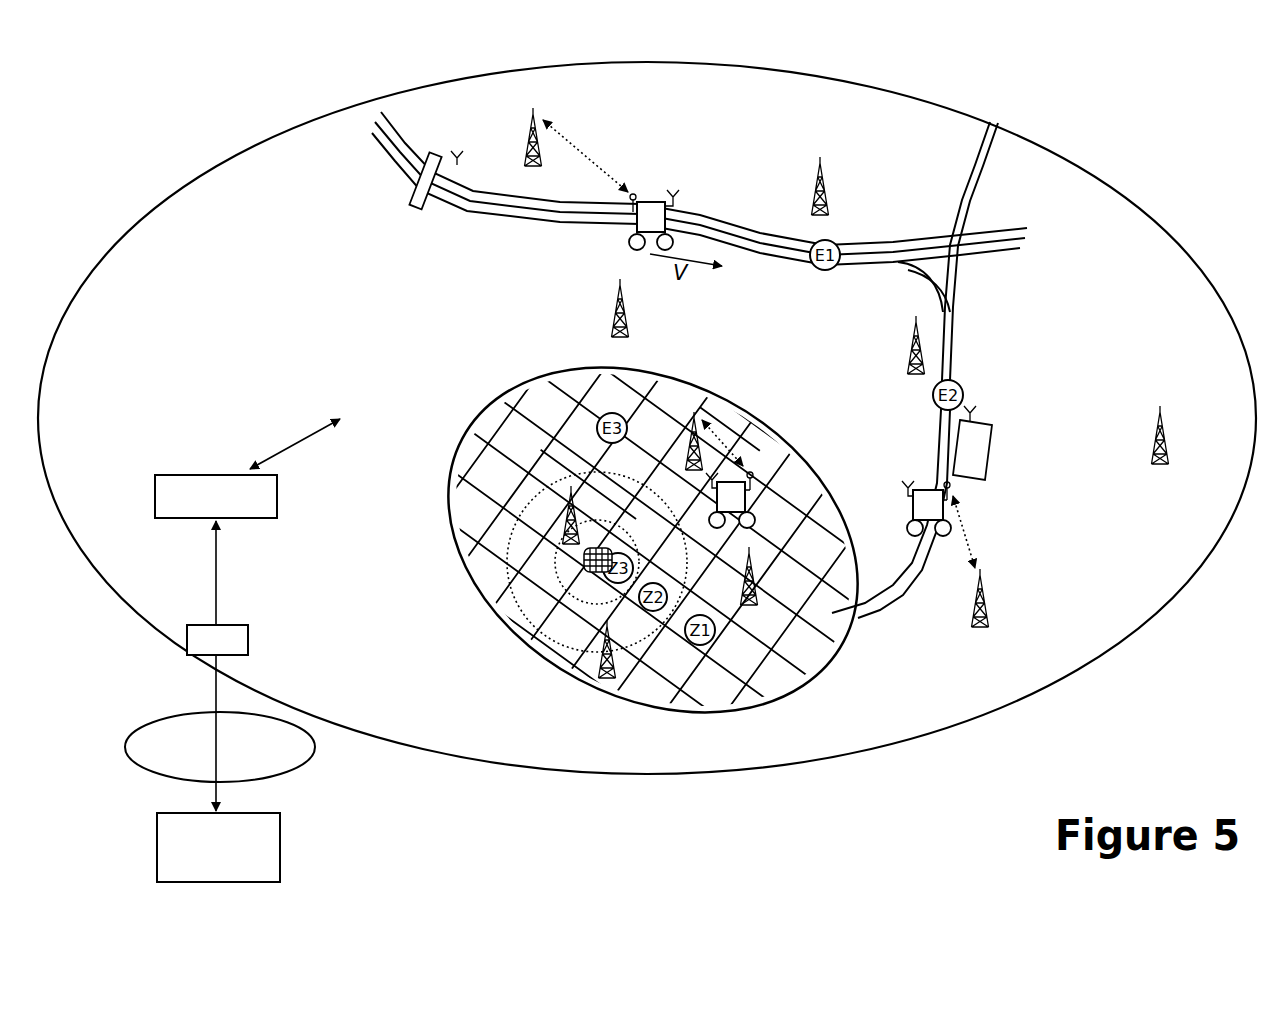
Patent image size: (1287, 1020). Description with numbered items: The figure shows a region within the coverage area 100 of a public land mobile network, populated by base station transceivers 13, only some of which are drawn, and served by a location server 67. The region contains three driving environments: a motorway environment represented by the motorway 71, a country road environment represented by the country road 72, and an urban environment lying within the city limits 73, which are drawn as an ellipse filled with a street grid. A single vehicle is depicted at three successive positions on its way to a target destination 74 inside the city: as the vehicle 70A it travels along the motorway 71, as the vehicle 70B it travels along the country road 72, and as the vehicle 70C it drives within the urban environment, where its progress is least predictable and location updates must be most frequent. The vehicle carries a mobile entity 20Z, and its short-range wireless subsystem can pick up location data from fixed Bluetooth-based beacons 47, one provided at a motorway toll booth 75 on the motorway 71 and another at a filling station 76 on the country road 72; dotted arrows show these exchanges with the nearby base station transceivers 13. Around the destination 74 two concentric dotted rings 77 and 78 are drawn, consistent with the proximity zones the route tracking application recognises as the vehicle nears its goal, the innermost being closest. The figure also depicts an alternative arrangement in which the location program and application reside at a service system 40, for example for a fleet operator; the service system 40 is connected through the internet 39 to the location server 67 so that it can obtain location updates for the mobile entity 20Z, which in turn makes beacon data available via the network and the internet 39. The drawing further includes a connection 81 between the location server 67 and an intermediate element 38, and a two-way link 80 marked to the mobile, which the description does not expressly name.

The coverage area 100 is at (102, 258).
The base station transceivers 13 is at (532, 130).
The beacons 47 is at (457, 165).
The motorway toll booth 75 is at (415, 205).
The motorway 71 is at (510, 213).
The country road 72 is at (953, 352).
The vehicle in first position 70A is at (625, 235).
The vehicle in second position 70B is at (894, 487).
The vehicle in third position 70C is at (751, 503).
The mobile entity 20Z is at (650, 202).
The filling station 76 is at (977, 447).
The city limits 73 is at (760, 421).
The target destination 74 is at (582, 568).
The outer uncertainty circle 77 is at (535, 617).
The inner uncertainty circle 78 is at (580, 652).
The location server 67 is at (155, 497).
The link to mobile 80 is at (290, 442).
The link 81 is at (215, 590).
The gateway 38 is at (187, 647).
The internet 39 is at (300, 767).
The service system 40 is at (282, 840).